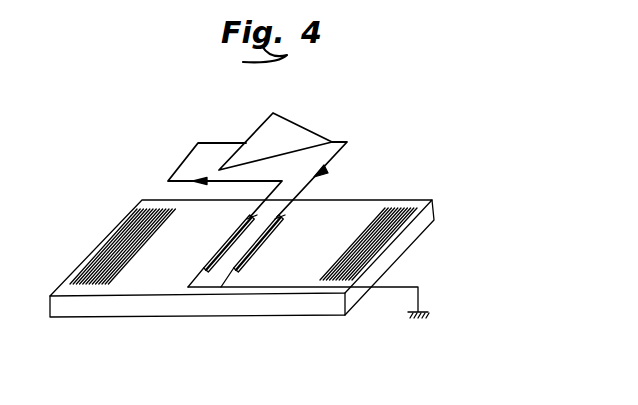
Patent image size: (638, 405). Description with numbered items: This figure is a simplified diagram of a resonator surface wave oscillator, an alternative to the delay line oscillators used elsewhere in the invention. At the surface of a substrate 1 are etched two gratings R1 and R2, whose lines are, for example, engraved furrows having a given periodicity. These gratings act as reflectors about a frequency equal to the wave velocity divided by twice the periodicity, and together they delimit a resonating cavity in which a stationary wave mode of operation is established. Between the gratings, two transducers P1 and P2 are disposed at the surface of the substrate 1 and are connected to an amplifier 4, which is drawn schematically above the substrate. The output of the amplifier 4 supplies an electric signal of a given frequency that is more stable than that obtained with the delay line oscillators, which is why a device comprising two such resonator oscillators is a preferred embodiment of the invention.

The substrate 1 is at (66, 313).
The amplifier 4 is at (265, 133).
The grating R1 is at (380, 238).
The grating R2 is at (115, 245).
The transducer P1 is at (256, 256).
The transducer P2 is at (209, 262).